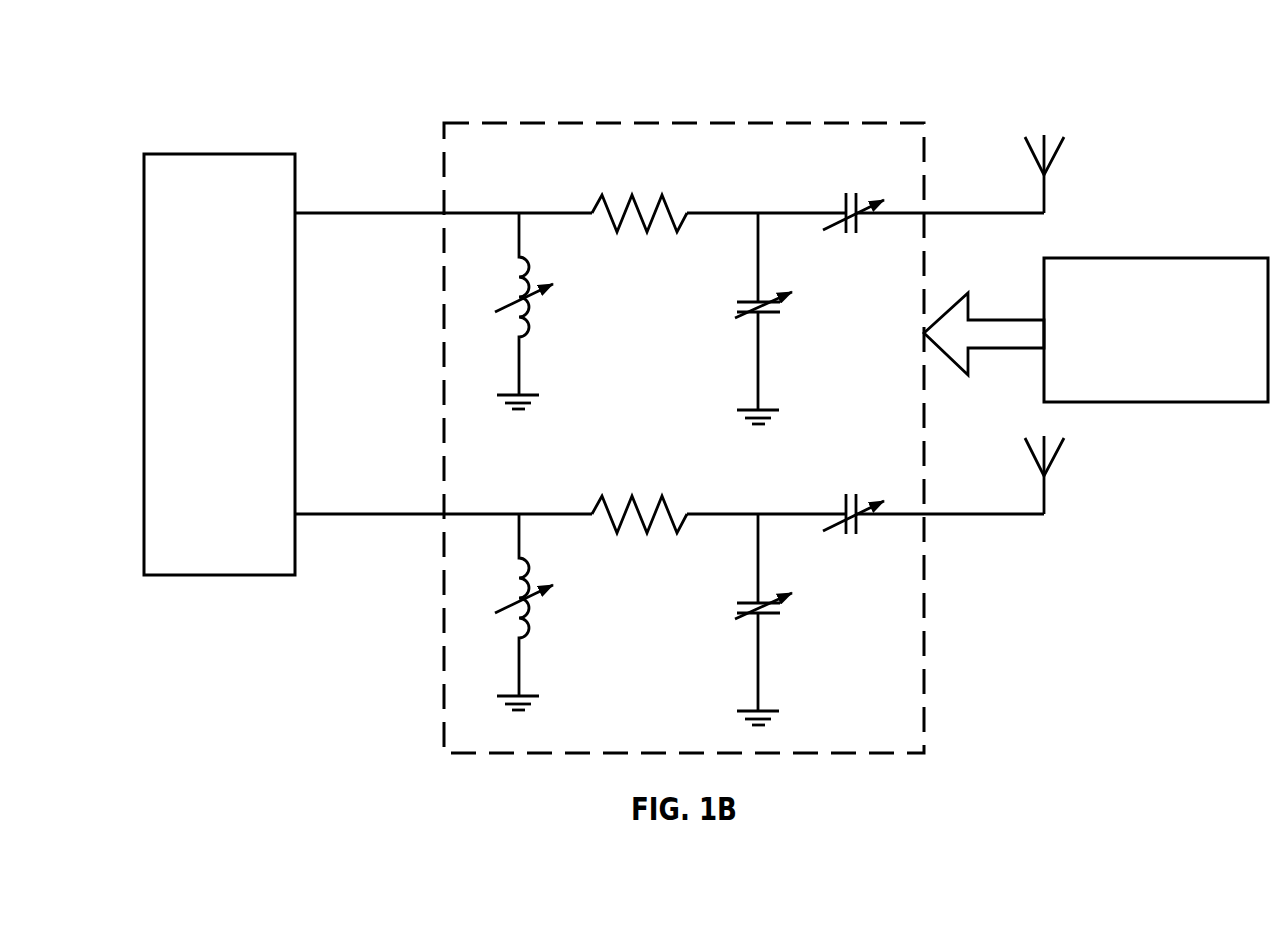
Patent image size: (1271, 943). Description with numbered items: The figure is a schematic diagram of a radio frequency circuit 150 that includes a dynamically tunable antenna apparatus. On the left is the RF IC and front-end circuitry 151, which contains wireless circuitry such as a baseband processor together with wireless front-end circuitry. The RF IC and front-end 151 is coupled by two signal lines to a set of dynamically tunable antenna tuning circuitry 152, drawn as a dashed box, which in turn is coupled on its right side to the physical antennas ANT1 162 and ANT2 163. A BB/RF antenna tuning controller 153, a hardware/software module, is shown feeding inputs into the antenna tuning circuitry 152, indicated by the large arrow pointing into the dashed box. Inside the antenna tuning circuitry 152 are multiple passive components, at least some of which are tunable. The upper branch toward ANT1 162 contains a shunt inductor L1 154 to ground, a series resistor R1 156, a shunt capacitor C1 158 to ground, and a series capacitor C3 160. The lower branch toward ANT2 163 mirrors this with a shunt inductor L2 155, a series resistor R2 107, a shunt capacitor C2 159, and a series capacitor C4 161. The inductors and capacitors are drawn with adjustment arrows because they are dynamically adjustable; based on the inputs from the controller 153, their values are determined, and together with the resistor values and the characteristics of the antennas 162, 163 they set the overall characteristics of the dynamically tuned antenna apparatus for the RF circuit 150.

The RF circuit 150 is at (661, 401).
The RF IC and front-end circuitry 151 is at (239, 423).
The antenna tuning circuitry 152 is at (1022, 78).
The BB/RF antenna tuning controller 153 is at (1175, 385).
The inductor L1 154 is at (555, 311).
The inductor L2 155 is at (555, 612).
The resistor R1 156 is at (639, 196).
The resistor R2 107 is at (639, 497).
The capacitor C1 158 is at (800, 318).
The capacitor C2 159 is at (800, 619).
The capacitor C3 160 is at (855, 197).
The capacitor C4 161 is at (855, 498).
The physical antenna ANT1 162 is at (1078, 170).
The physical antenna ANT2 163 is at (1078, 471).